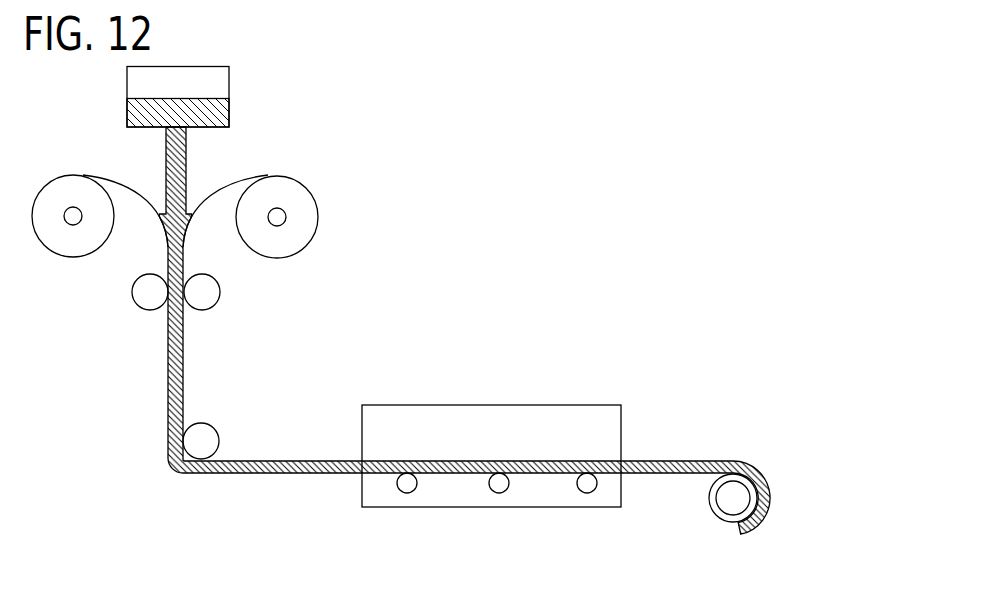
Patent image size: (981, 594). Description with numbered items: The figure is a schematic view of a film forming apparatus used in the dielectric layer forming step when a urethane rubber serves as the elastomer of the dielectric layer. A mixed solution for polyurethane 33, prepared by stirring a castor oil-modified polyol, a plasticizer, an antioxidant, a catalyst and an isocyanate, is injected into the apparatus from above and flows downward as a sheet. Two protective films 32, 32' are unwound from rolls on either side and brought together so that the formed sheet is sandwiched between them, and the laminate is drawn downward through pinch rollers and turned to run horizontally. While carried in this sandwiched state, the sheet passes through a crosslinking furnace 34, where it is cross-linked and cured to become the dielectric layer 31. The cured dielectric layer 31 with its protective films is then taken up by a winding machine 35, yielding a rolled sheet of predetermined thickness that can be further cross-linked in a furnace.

The dielectric layer 31 is at (670, 461).
The protective film 32 is at (88, 197).
The protective film 32' is at (260, 198).
The mixed solution for polyurethane 33 is at (229, 112).
The crosslinking furnace 34 is at (485, 404).
The winding machine 35 is at (769, 477).